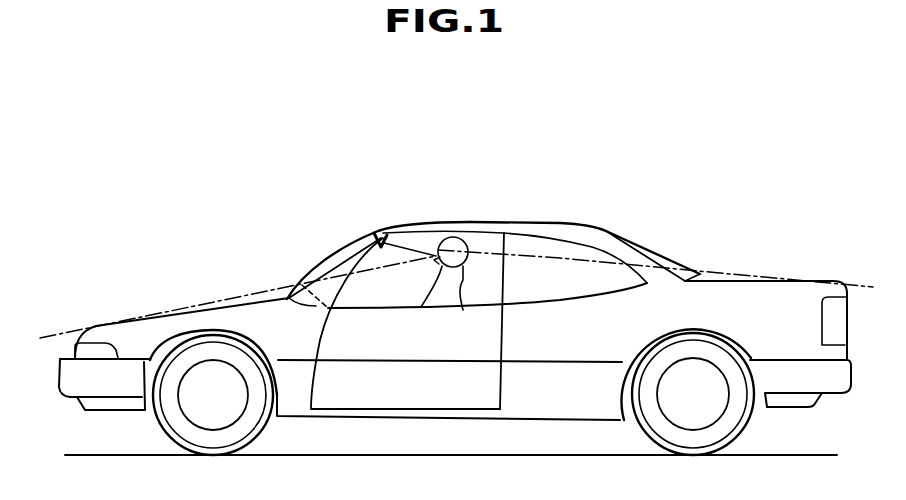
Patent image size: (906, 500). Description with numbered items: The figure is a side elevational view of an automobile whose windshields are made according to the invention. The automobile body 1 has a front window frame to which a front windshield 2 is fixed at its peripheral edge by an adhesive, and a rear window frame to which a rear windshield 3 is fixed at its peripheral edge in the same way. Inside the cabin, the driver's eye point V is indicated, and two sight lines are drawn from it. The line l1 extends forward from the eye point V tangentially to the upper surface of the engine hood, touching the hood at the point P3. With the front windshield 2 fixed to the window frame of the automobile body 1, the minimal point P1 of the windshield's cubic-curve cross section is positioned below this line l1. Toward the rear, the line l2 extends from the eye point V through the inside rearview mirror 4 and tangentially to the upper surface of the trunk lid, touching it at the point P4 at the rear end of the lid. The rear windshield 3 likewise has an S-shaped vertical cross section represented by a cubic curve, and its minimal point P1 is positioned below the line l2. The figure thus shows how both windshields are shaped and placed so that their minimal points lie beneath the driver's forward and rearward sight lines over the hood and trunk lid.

The automobile body 1 is at (563, 227).
The front windshield 2 is at (353, 249).
The rear windshield 3 is at (636, 243).
The inside rearview mirror 4 is at (380, 242).
The eye point V is at (472, 243).
The line l1 is at (177, 308).
The line l2 is at (518, 250).
The minimal point P1 is at (308, 291).
The tangent point on engine hood P3 is at (105, 326).
The tangent point on trunk lid P4 is at (833, 281).